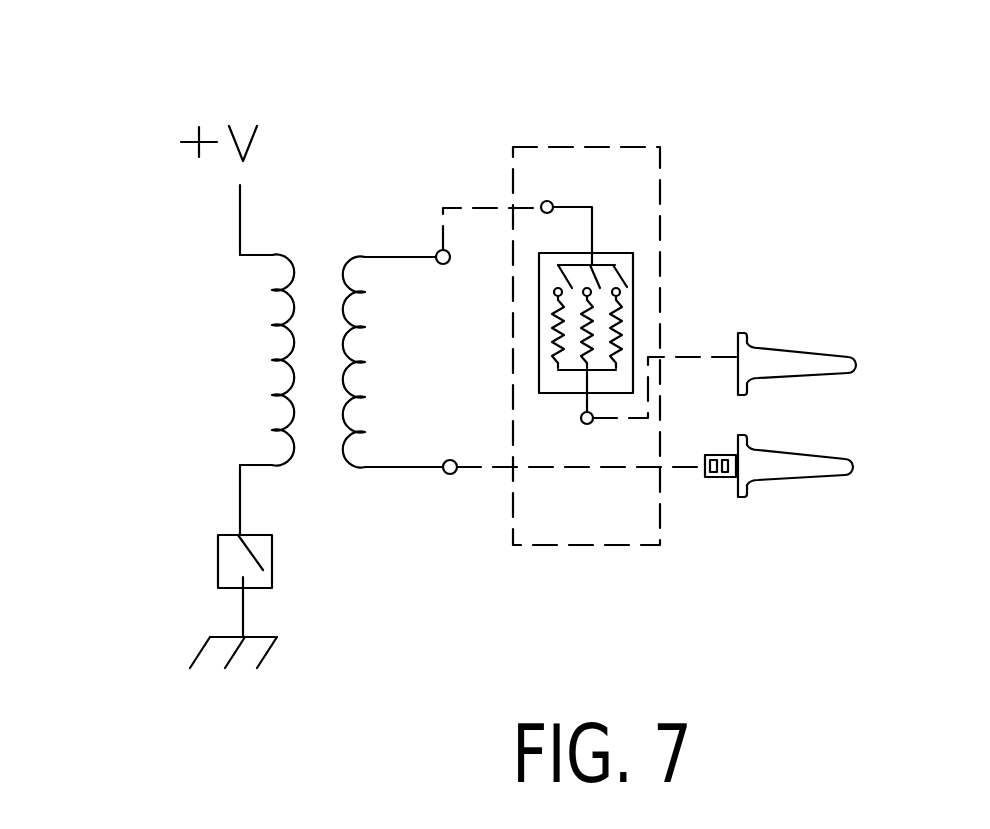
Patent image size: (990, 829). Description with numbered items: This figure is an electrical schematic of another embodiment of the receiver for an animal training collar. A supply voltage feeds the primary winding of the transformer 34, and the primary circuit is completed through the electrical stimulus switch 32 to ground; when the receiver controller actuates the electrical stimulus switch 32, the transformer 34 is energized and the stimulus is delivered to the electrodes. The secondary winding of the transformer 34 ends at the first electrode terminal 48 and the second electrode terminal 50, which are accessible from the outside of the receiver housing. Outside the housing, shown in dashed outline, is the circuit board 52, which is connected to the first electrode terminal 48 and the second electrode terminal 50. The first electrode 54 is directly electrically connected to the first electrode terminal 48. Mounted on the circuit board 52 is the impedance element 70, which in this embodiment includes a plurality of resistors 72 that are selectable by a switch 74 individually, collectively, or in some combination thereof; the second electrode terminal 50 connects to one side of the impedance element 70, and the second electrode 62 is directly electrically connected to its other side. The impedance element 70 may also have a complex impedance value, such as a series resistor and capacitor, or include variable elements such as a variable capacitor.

The electrical stimulus switch 32 is at (216, 564).
The transformer 34 is at (327, 246).
The first electrode terminal 48 is at (449, 475).
The second electrode terminal 50 is at (438, 250).
The circuit board 52 is at (610, 147).
The first electrode 54 is at (805, 465).
The second electrode 62 is at (818, 360).
The impedance element 70 is at (627, 250).
The resistors 72 is at (612, 340).
The switch 74 is at (623, 278).